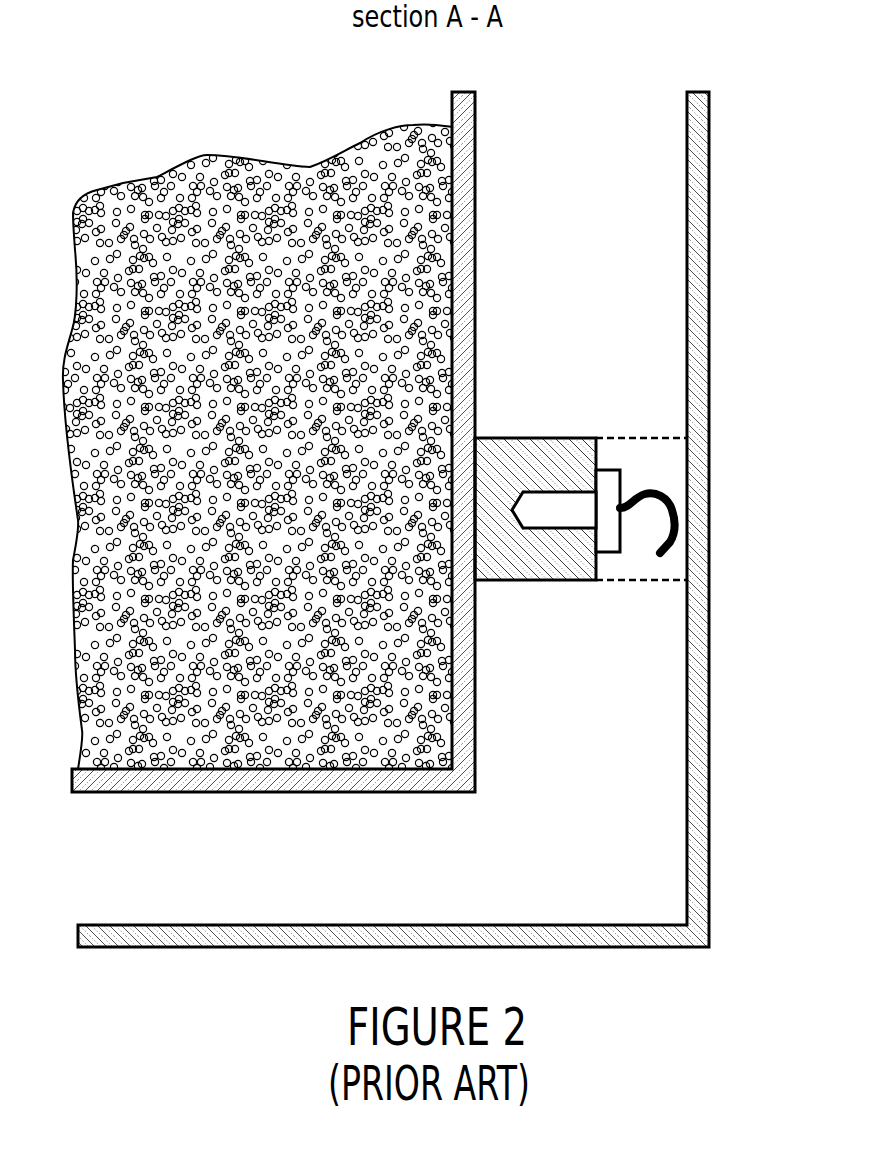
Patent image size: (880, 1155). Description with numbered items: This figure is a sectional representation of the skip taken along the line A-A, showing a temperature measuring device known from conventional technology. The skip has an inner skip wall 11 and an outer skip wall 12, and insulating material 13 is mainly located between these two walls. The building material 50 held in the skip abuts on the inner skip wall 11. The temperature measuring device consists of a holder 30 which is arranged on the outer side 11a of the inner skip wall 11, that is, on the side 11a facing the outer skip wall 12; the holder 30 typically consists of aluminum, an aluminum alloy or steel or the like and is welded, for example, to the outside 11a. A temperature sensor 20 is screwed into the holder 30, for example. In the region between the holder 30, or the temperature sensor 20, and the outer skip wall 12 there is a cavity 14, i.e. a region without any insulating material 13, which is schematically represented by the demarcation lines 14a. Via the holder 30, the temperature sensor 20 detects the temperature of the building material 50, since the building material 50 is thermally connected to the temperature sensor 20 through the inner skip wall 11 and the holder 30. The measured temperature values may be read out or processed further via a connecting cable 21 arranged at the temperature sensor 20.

The inner skip wall 11 is at (468, 243).
The outer side of the inner skip wall 11a is at (486, 386).
The outer skip wall 12 is at (695, 137).
The insulating material 13 is at (652, 280).
The cavity 14 is at (674, 475).
The demarcation lines 14a is at (676, 568).
The temperature sensor 20 is at (609, 524).
The connecting cable 21 is at (668, 512).
The holder 30 is at (513, 563).
The building material 50 is at (223, 185).